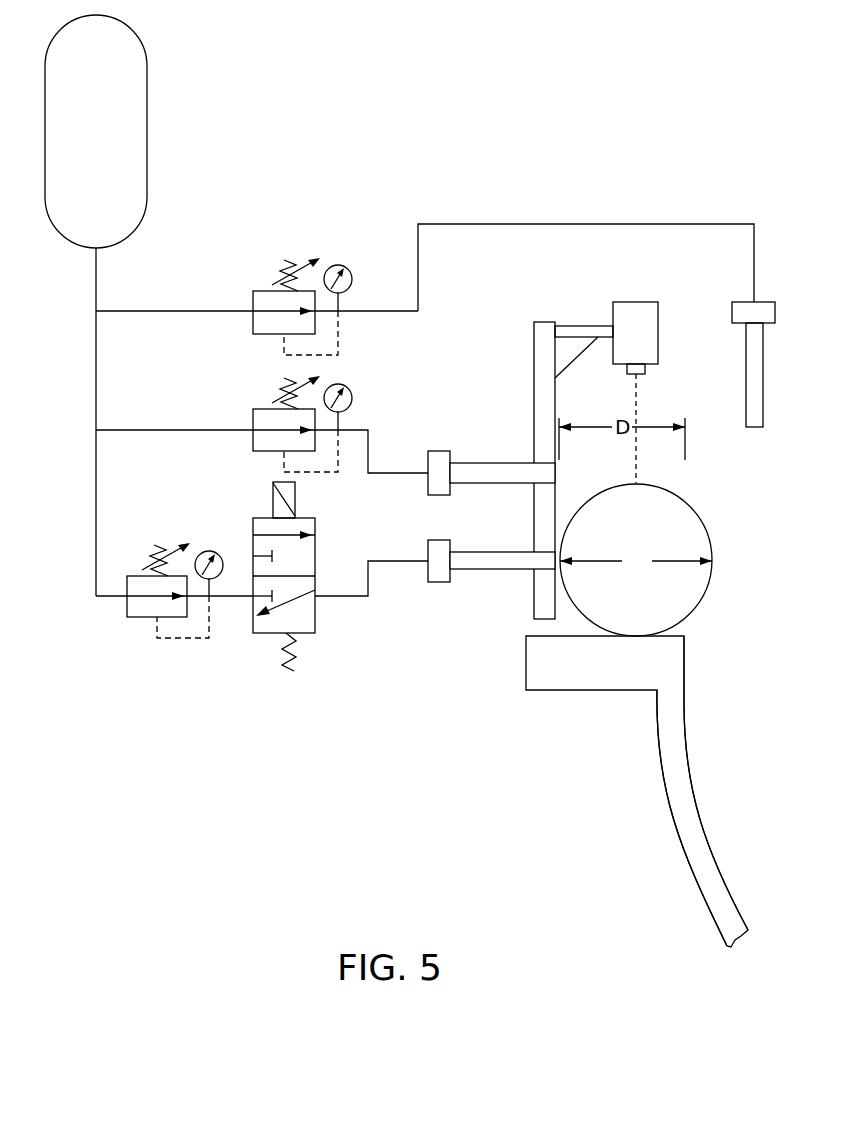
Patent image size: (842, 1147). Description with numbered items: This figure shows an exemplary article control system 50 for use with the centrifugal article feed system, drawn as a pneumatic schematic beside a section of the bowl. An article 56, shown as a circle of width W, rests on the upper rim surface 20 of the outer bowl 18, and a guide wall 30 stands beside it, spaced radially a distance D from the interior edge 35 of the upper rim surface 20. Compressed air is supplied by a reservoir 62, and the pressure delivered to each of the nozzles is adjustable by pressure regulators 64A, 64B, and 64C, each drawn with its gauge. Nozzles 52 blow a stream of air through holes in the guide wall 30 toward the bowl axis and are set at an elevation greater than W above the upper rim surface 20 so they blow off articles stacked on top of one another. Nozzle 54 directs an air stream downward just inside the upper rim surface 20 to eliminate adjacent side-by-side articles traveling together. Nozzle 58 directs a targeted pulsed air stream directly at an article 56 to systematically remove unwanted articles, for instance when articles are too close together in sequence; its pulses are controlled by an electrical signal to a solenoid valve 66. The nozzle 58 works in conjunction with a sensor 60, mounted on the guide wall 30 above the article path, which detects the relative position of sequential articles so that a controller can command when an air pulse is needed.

The article control system 50 is at (416, 168).
The reservoir 62 is at (147, 80).
The pressure regulator 64A is at (253, 321).
The pressure regulator 64B is at (253, 440).
The pressure regulator 64C is at (133, 617).
The solenoid valve 66 is at (315, 530).
The air nozzle 54 is at (763, 366).
The guide wall 30 is at (534, 380).
The air nozzle 52 is at (487, 462).
The air nozzle 58 is at (488, 583).
The sensor 60 is at (638, 302).
The article 56 is at (697, 508).
The upper rim surface 20 is at (684, 636).
The interior edge 35 is at (684, 668).
The outer bowl 18 is at (686, 793).